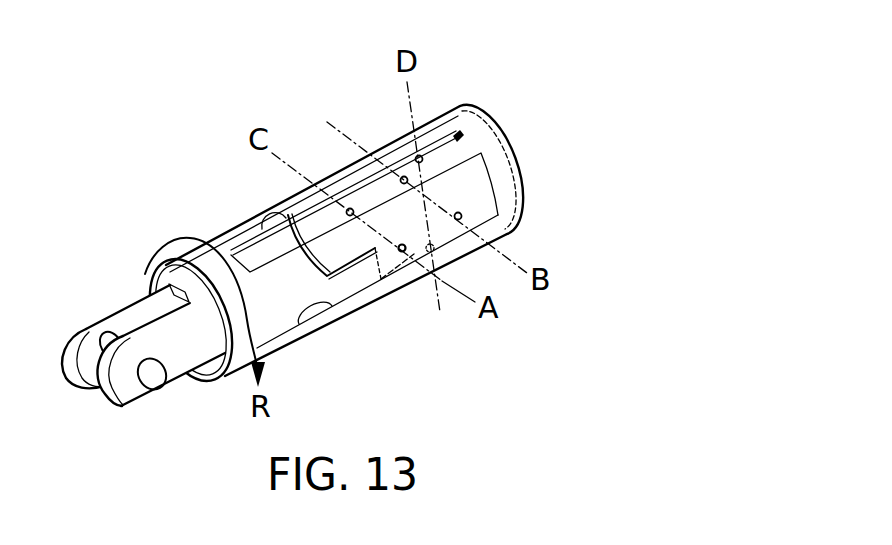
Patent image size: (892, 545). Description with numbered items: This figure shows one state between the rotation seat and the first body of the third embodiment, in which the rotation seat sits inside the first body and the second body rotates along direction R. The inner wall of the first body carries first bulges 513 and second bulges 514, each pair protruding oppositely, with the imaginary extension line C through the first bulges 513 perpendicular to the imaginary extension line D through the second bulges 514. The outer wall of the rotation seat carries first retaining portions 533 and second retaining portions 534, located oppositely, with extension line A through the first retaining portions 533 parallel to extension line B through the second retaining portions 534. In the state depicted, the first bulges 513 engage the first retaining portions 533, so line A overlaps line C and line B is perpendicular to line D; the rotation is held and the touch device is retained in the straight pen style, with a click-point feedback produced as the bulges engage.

The first bulges 513 is at (350, 209).
The first retaining portions 533 is at (404, 252).
The second retaining portions 534 is at (404, 177).
The second bulges 514 is at (431, 146).